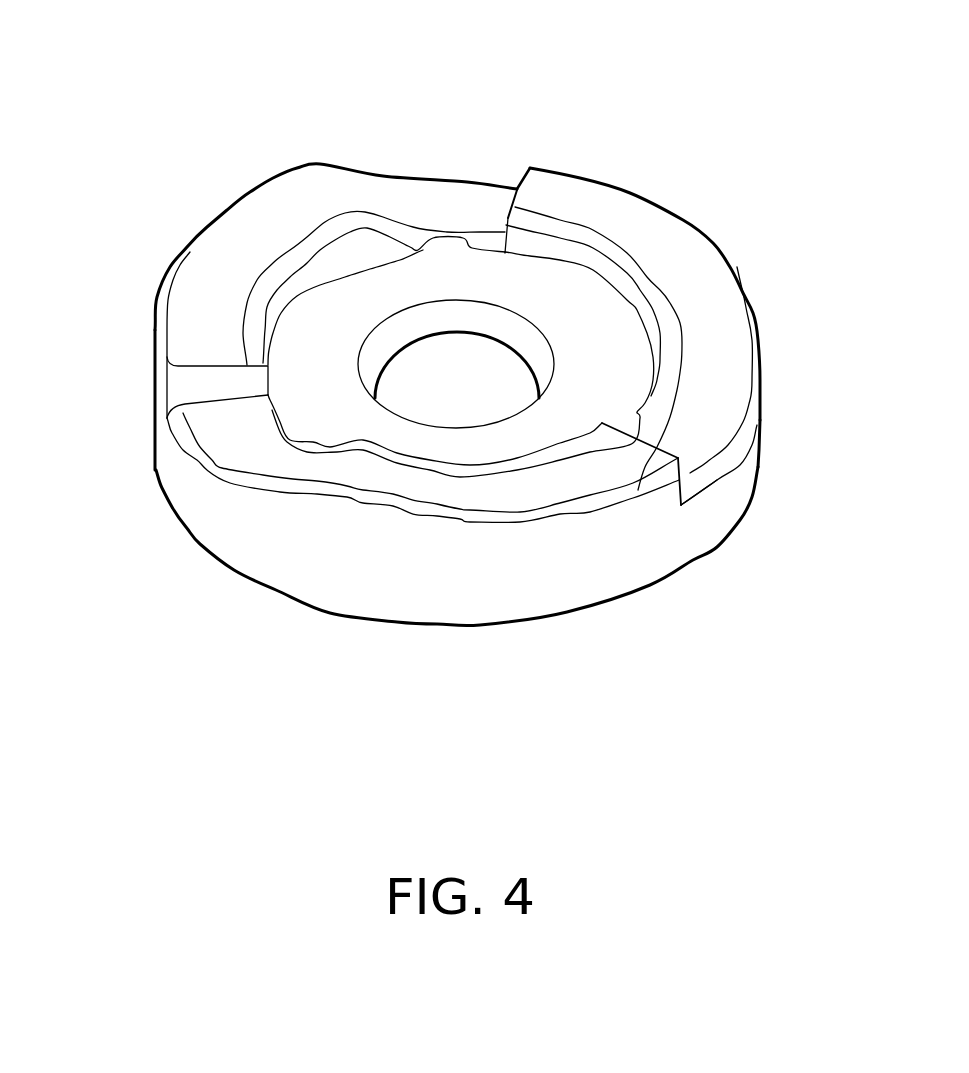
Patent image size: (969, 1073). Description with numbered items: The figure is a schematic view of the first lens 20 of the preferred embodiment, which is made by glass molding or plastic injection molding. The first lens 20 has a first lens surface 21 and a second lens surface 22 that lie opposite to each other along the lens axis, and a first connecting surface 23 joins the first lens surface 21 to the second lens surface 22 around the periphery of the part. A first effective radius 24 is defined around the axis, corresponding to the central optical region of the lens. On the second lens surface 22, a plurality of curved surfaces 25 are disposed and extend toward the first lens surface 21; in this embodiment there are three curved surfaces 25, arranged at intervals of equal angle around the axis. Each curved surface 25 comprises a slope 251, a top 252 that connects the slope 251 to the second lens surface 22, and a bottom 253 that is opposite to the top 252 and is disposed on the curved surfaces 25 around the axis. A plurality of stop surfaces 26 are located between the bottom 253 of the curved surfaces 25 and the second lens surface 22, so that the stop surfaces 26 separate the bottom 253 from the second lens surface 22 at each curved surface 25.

The first lens 20 is at (273, 592).
The first lens surface 21 is at (437, 625).
The second lens surface 22 is at (565, 483).
The first connecting surface 23 is at (407, 577).
The first effective radius 24 is at (527, 332).
The curved surfaces 25 is at (375, 174).
The slope 251 is at (435, 208).
The top 252 is at (358, 190).
The bottom 253 is at (488, 208).
The stop surfaces 26 is at (515, 210).